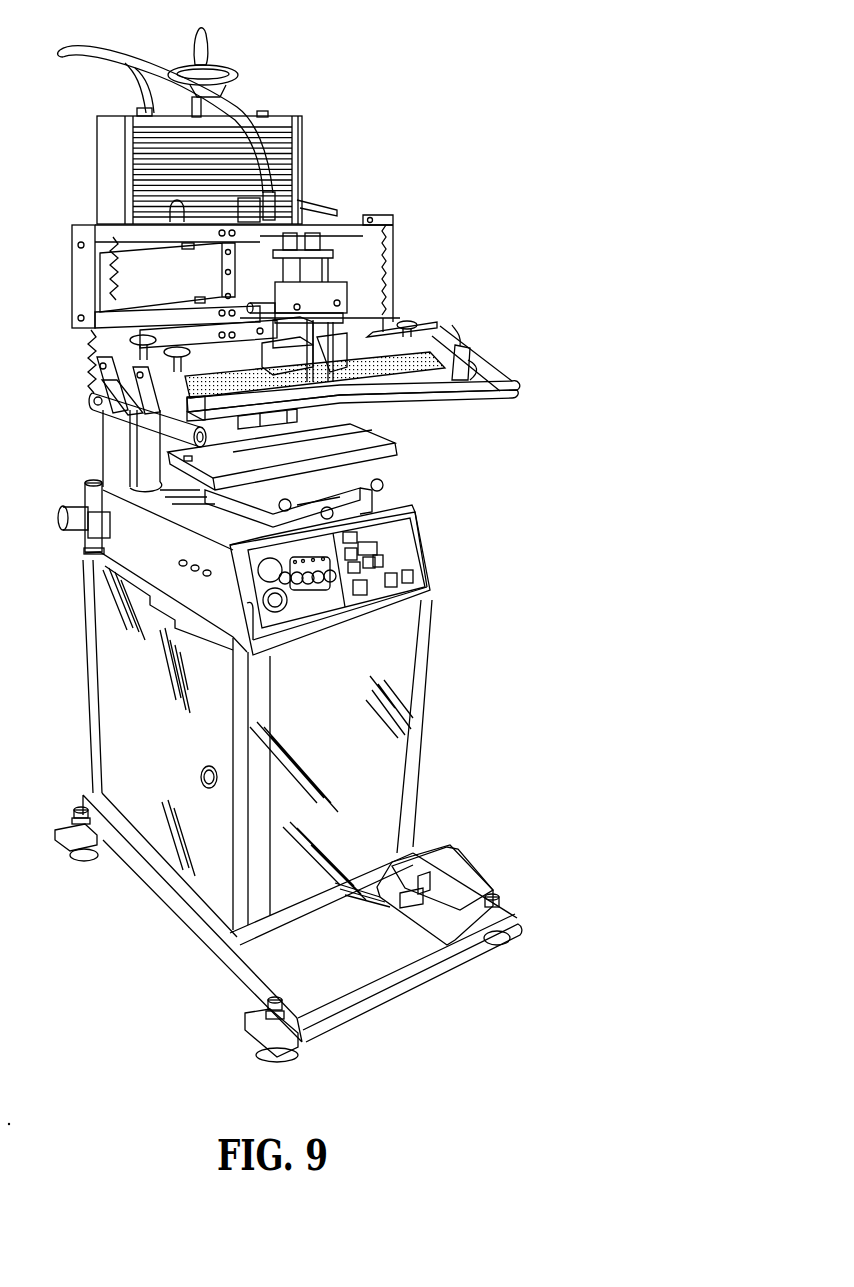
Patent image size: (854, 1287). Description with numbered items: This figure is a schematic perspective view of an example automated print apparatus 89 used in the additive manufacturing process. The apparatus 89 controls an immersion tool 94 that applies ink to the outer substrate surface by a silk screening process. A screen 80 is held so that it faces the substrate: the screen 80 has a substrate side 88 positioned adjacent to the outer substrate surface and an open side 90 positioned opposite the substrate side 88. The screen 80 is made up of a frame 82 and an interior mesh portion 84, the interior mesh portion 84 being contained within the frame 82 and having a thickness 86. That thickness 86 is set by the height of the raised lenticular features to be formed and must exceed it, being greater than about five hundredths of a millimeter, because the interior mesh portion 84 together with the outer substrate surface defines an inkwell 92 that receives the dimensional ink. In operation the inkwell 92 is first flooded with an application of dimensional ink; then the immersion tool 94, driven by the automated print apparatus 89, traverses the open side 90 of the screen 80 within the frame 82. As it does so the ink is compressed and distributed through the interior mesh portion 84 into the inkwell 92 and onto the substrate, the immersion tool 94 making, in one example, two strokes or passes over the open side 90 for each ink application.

The screen 80 is at (423, 387).
The frame 82 is at (437, 380).
The interior mesh portion 84 is at (227, 380).
The thickness 86 is at (472, 370).
The substrate side 88 is at (395, 398).
The automated print apparatus 89 is at (373, 133).
The open side 90 is at (383, 325).
The inkwell 92 is at (247, 380).
The immersion tool 94 is at (347, 364).